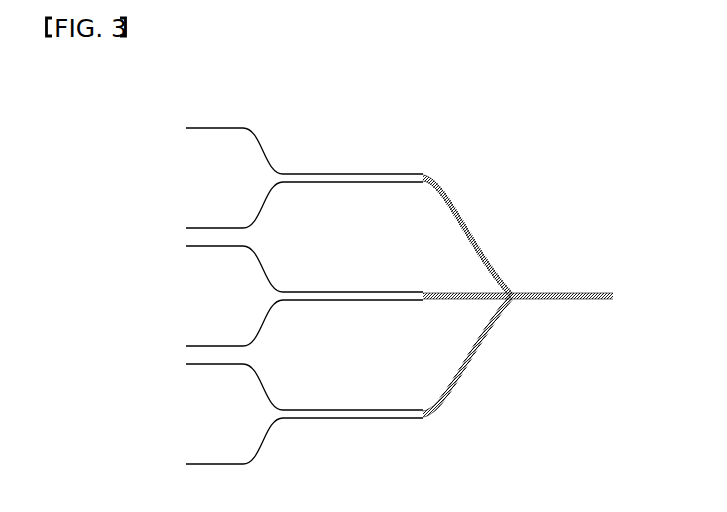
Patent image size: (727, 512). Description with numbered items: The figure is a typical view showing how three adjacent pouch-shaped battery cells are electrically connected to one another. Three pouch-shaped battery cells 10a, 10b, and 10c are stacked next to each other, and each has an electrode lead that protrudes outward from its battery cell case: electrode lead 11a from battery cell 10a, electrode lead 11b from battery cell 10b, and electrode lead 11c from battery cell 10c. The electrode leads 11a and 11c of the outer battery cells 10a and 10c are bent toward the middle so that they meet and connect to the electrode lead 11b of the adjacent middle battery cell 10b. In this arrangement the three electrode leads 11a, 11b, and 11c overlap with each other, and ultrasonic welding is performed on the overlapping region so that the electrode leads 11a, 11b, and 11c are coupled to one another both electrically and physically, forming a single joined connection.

The pouch-shaped battery cell 10a is at (215, 192).
The pouch-shaped battery cell 10b is at (212, 308).
The pouch-shaped battery cell 10c is at (209, 416).
The electrode lead 11a is at (462, 228).
The electrode lead 11b is at (493, 293).
The electrode lead 11c is at (468, 352).